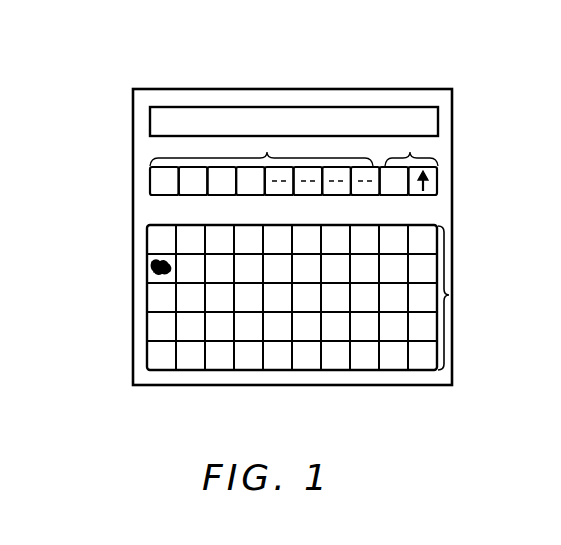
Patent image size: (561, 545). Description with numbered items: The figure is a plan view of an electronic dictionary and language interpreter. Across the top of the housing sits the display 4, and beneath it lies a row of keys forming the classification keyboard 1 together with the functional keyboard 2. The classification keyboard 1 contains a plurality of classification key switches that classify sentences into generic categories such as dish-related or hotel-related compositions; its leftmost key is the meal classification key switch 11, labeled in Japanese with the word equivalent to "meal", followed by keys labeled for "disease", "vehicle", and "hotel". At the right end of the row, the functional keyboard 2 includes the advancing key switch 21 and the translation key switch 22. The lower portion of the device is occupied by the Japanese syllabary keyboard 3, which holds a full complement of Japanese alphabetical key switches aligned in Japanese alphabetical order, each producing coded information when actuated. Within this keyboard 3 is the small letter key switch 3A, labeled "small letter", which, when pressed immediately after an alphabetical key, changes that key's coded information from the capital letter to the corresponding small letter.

The classification keyboard 1 is at (218, 118).
The functional keyboard 2 is at (452, 120).
The Japanese syllabary keyboard 3 is at (273, 297).
The small letter key switch 3A is at (150, 257).
The display 4 is at (355, 125).
The meal classification key switch 11 is at (155, 181).
The advancing key switch 21 is at (433, 182).
The translation key switch 22 is at (398, 197).